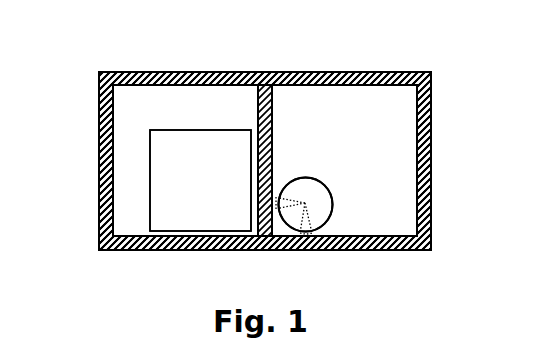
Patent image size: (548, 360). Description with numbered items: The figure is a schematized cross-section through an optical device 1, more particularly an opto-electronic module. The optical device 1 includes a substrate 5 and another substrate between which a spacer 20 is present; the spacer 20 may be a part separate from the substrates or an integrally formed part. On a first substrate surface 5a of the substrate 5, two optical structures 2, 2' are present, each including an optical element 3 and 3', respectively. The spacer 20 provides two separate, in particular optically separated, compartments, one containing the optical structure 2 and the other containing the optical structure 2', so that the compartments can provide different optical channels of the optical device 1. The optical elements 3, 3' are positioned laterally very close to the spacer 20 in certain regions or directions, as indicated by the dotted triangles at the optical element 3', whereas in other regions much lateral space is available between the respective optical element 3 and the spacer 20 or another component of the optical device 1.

The optical device 1 is at (77, 27).
The substrate 5 is at (222, 95).
The first substrate surface 5a is at (292, 98).
The spacer 20 is at (270, 150).
The optical structure 2 is at (145, 180).
The optical element 3 is at (155, 180).
The optical structure 2' is at (379, 205).
The optical element 3' is at (386, 206).